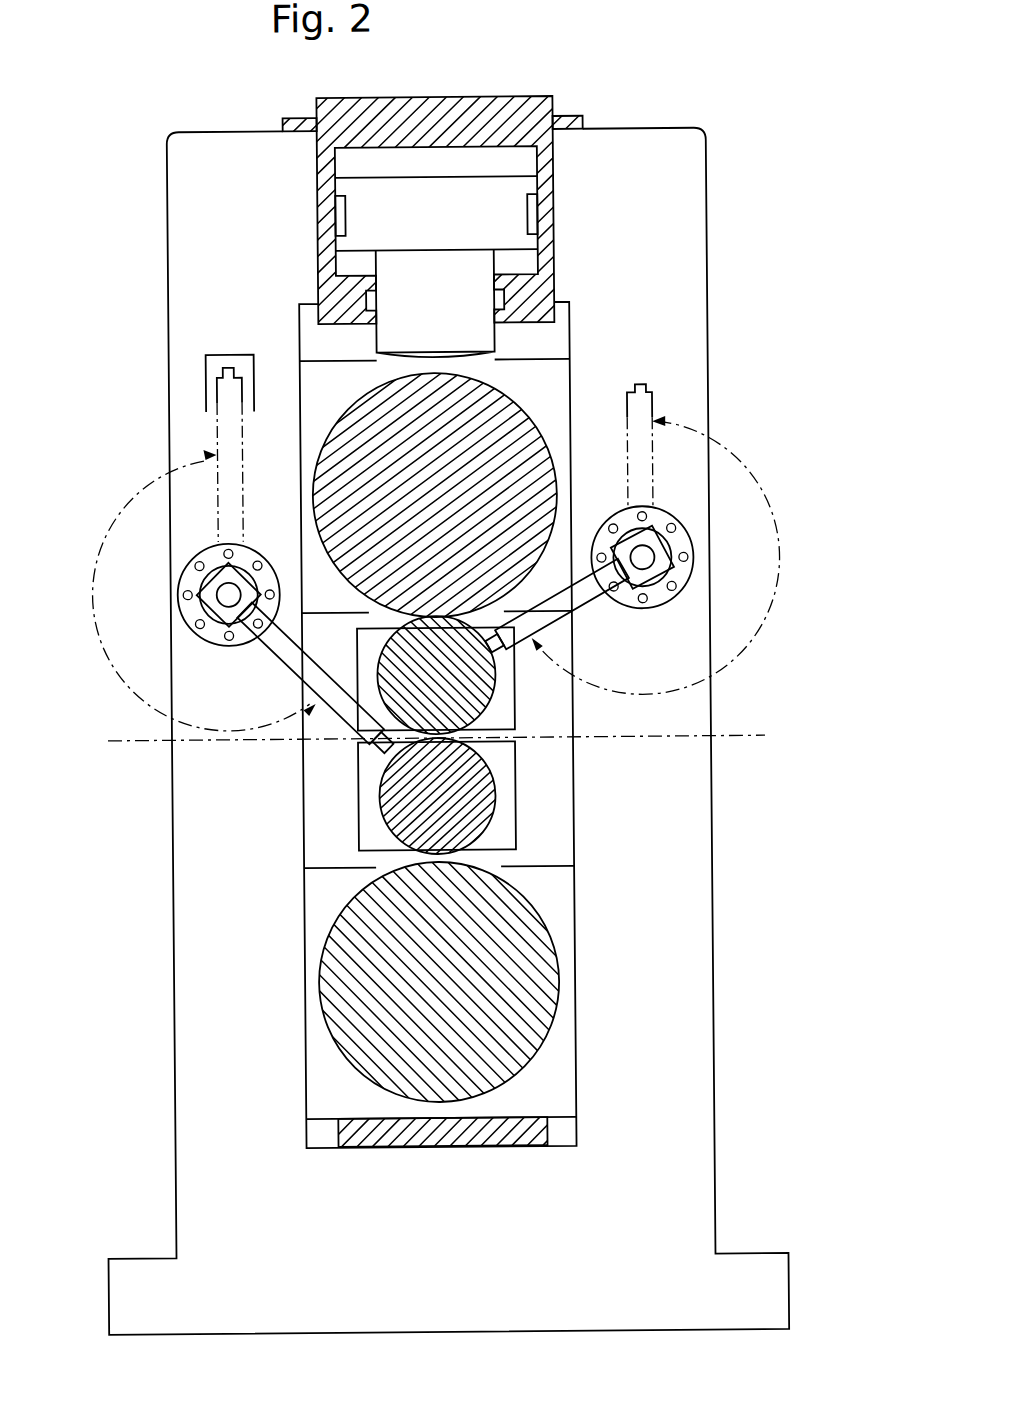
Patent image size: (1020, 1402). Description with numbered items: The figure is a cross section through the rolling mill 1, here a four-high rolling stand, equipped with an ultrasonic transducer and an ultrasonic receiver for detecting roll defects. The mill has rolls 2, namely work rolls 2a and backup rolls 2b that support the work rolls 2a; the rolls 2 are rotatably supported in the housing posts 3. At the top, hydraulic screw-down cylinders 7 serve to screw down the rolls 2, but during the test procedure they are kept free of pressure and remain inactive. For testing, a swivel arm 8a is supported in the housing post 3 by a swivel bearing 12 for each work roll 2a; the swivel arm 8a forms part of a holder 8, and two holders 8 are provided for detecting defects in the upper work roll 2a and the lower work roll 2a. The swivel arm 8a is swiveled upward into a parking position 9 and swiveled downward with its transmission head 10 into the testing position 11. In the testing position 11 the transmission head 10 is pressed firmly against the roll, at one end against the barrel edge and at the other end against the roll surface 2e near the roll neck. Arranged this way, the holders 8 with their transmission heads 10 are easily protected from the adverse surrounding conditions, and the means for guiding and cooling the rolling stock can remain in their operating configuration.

The rolling mill 1 is at (621, 102).
The rolls 2 is at (506, 430).
The work rolls 2a is at (482, 688).
The backup rolls 2b is at (545, 1041).
The roll surface 2e is at (397, 818).
The housing posts 3 is at (236, 193).
The hydraulic screw-down cylinders 7 is at (458, 126).
The holders 8 is at (652, 545).
The swivel arm 8a is at (220, 434).
The parking position 9 is at (209, 386).
The transmission head 10 is at (390, 763).
The testing position 11 is at (357, 716).
The swivel bearing 12 is at (188, 610).